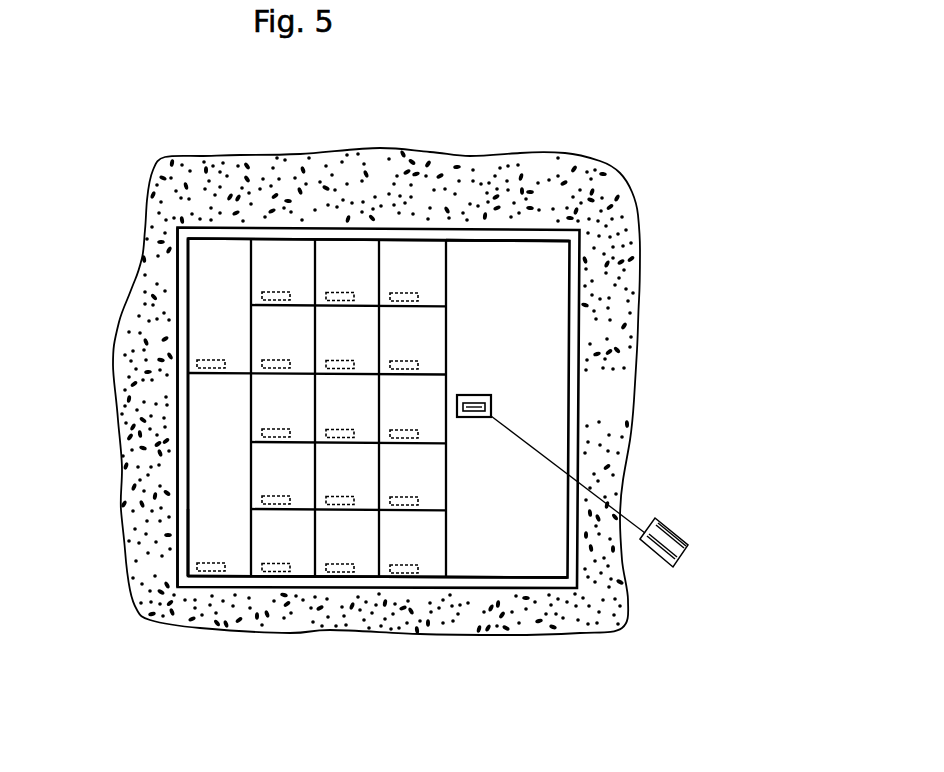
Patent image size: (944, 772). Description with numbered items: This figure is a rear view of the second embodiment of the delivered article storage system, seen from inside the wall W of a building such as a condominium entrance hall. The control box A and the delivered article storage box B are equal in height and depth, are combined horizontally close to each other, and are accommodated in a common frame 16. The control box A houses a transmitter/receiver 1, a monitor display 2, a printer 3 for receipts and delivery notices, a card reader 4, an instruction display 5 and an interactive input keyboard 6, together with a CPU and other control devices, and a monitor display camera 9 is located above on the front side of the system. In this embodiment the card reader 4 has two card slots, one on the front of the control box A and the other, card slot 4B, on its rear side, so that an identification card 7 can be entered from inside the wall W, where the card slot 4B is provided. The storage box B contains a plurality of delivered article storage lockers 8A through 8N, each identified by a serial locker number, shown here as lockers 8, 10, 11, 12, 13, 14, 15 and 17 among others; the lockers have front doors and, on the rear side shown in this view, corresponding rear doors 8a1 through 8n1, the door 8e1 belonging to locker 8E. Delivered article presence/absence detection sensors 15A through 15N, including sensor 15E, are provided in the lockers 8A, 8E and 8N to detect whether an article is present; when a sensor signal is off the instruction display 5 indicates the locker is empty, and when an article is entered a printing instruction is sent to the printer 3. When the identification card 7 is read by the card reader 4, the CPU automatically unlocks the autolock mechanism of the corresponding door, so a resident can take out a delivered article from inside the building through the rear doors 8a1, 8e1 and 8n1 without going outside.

The transmitter/receiver 1 is at (410, 296).
The monitor display 2 is at (410, 364).
The printer 3 is at (410, 433).
The card reader 4 is at (657, 379).
The instruction display 5 is at (410, 568).
The interactive input keyboard 6 is at (346, 296).
The identification card 7 is at (691, 582).
The sensing element 8 is at (346, 433).
The monitor display camera 9 is at (346, 500).
The sensing element 10 is at (352, 567).
The sensing element 11 is at (288, 295).
The sensing element 12 is at (288, 363).
The sensing element 13 is at (288, 432).
The sensing element 14 is at (288, 499).
The sensing element 15 is at (288, 567).
The frame 16 is at (289, 646).
The sensing element 17 is at (223, 566).
The delivered article storage locker 8A is at (394, 255).
The rear side door 8a1 is at (420, 240).
The delivered article presence/absence detection sensor 15A is at (419, 292).
The control box A is at (528, 224).
The delivered article storage box B is at (175, 334).
The delivered article storage locker 8N is at (207, 533).
The rear side door 8n1 is at (195, 554).
The delivered article presence/absence detection sensor 15N is at (211, 577).
The rear side door 8e1 is at (327, 553).
The delivered article presence/absence detection sensor 15E is at (401, 579).
The delivered article storage locker 8E is at (438, 542).
The wall W is at (553, 620).
The card slot 4B is at (491, 407).